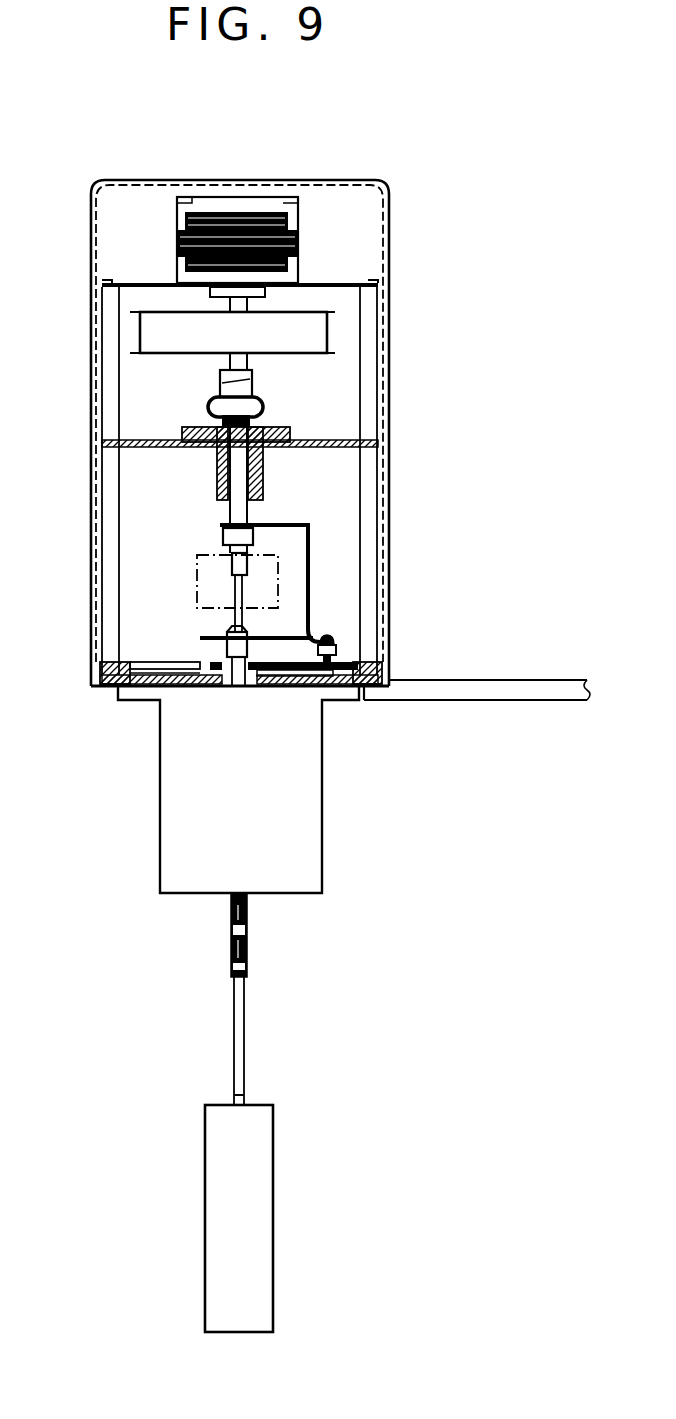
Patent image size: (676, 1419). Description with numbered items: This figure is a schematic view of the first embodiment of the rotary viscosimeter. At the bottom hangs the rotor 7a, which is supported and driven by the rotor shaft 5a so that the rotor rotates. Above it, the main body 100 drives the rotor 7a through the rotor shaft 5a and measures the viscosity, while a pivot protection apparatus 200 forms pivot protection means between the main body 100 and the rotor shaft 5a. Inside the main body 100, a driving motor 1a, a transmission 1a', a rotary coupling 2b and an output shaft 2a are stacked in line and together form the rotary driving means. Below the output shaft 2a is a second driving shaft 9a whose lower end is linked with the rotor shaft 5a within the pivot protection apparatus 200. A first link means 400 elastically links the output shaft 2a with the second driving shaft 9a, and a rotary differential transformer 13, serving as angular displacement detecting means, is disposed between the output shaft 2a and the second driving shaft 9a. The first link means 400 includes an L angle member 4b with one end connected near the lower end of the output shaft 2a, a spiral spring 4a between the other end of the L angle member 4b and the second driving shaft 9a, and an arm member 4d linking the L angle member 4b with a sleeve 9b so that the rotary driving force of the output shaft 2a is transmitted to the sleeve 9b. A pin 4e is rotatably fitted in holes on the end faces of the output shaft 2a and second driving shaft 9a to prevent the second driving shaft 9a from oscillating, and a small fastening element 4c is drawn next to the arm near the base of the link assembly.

The driving motor 1a is at (328, 250).
The main body 100 is at (390, 250).
The transmission 1a' is at (304, 322).
The rotary coupling 2b is at (253, 375).
The output shaft 2a is at (243, 513).
The rotary differential transformer 13 is at (197, 563).
The second driving shaft 9a is at (235, 620).
The first link means 400 is at (377, 589).
The L angle member 4b is at (313, 542).
The pin 4e is at (248, 580).
The spiral spring 4a is at (262, 628).
The adjusting screw 4c is at (333, 655).
The arm member 4d is at (344, 664).
The sleeve 9b is at (200, 667).
The pivot protection apparatus 200 is at (322, 805).
The rotor shaft 5a is at (250, 933).
The rotor 7a is at (273, 1200).